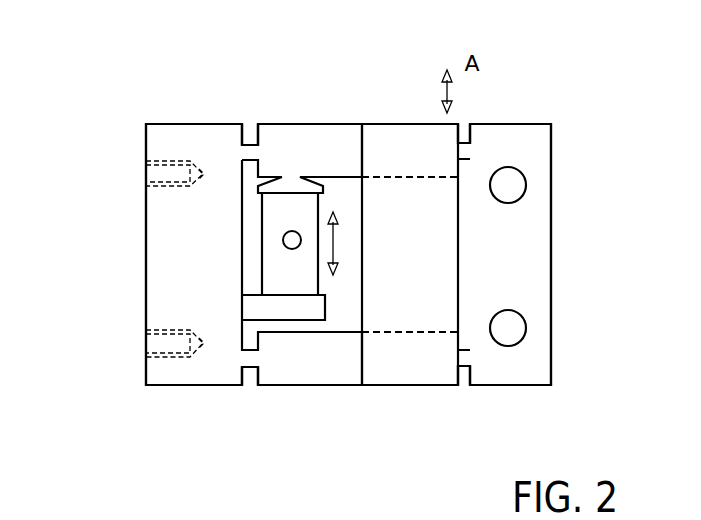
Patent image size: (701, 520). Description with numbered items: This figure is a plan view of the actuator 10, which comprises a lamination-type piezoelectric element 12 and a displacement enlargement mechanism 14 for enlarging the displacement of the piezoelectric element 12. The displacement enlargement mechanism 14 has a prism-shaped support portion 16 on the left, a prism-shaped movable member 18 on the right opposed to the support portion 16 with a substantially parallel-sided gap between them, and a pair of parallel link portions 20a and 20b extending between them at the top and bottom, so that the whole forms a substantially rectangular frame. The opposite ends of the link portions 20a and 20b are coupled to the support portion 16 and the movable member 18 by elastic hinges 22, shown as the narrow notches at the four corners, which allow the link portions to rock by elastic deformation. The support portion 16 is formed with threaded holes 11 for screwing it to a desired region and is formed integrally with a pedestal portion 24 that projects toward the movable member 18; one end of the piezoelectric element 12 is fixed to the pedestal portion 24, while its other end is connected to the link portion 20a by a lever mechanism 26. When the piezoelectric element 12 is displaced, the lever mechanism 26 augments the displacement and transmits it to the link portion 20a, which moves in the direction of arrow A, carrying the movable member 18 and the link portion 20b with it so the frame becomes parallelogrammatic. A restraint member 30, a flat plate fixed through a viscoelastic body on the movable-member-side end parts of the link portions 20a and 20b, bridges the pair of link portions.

The actuator 10 is at (277, 120).
The threaded holes 11 is at (146, 173).
The lamination-type piezoelectric element 12 is at (268, 218).
The displacement enlargement mechanism 14 is at (390, 390).
The support portion 16 is at (167, 258).
The movable member 18 is at (536, 227).
The link portion 20a is at (328, 131).
The link portion 20b is at (280, 377).
The elastic hinges 22 is at (247, 151).
The pedestal portion 24 is at (248, 303).
The lever mechanism 26 is at (308, 186).
The restraint member 30 is at (388, 140).